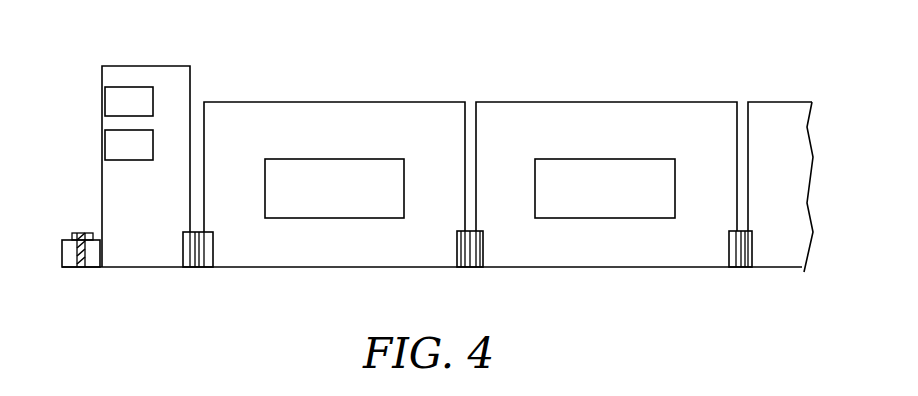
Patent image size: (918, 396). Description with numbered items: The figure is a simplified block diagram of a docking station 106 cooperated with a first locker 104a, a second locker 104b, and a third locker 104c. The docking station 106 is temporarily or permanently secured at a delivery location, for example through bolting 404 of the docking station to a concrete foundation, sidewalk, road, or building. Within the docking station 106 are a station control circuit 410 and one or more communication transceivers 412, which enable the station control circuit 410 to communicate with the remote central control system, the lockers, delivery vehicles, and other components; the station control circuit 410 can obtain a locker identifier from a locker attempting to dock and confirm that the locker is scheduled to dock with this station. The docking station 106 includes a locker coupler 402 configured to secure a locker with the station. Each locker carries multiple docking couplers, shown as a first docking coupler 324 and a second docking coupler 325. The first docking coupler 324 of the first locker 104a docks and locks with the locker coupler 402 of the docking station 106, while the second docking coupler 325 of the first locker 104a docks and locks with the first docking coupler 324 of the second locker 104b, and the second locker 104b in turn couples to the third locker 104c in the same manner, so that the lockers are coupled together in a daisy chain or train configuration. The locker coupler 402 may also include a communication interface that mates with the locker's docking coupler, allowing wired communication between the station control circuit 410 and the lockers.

The docking station 106 is at (176, 66).
The station control circuit 410 is at (112, 100).
The communication transceivers 412 is at (112, 145).
The bolting 404 is at (83, 233).
The locker coupler 402 is at (183, 250).
The first locker 104a is at (352, 113).
The second locker 104b is at (567, 113).
The third locker 104c is at (765, 110).
The first docking coupler 324 is at (213, 255).
The second docking coupler 325 is at (457, 257).